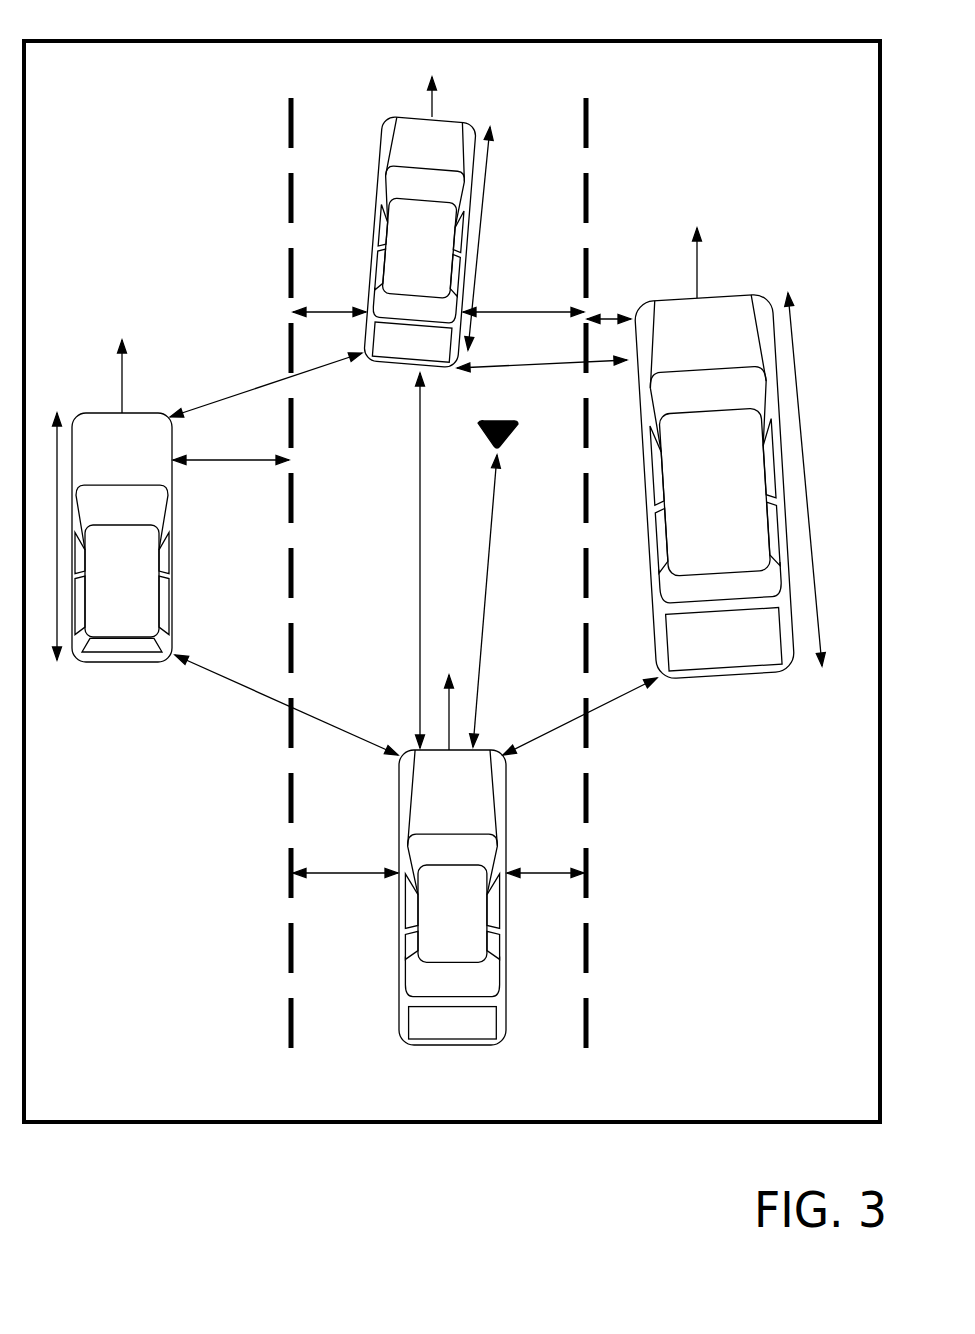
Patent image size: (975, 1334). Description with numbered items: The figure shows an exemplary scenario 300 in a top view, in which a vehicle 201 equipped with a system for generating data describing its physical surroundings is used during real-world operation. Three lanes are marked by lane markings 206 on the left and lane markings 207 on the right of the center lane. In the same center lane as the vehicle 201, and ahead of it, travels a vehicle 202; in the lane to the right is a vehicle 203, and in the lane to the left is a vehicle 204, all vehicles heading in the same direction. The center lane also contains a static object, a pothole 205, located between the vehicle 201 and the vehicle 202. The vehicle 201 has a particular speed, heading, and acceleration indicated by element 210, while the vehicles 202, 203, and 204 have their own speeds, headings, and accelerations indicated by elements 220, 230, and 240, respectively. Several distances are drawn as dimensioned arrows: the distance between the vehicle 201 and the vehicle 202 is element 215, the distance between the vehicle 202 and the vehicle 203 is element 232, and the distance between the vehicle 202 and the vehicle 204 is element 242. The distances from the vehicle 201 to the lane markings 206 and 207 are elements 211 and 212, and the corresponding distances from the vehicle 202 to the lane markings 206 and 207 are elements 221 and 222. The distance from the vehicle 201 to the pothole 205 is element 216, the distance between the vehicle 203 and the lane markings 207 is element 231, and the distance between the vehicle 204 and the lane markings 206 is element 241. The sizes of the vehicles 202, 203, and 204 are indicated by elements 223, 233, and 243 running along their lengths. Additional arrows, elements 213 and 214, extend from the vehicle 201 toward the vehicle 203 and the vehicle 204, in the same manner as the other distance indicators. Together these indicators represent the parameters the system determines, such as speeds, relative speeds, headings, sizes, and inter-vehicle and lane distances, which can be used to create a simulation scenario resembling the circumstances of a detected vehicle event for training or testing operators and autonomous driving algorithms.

The scenario 300 is at (833, 26).
The vehicle 201 is at (472, 831).
The vehicle 202 is at (377, 137).
The vehicle 203 is at (720, 367).
The vehicle 204 is at (140, 476).
The pothole 205 is at (580, 421).
The lane markings 206 is at (305, 1076).
The lane markings 207 is at (783, 1077).
The element indicating speed, heading, and acceleration of vehicle 201 210 is at (470, 676).
The element indicating distance from vehicle 201 to lane markings 206 211 is at (365, 872).
The element indicating distance from vehicle 201 to lane markings 207 212 is at (562, 872).
The distance from vehicle 201 to vehicle 203 213 is at (568, 722).
The distance from vehicle 201 to vehicle 204 214 is at (355, 719).
The element indicating distance between vehicle 201 and vehicle 202 215 is at (418, 617).
The element indicating distance from vehicle 201 to pothole 205 216 is at (530, 609).
The element indicating speed, heading, and acceleration of vehicle 202 220 is at (453, 72).
The element indicating distance from vehicle 202 to lane markings 206 221 is at (352, 309).
The element indicating distance from vehicle 202 to lane markings 207 222 is at (550, 311).
The element indicating size of vehicle 202 223 is at (530, 214).
The element indicating speed, heading, and acceleration of vehicle 203 230 is at (718, 224).
The element indicating distance between vehicle 203 and lane markings 207 231 is at (635, 314).
The element indicating distance between vehicle 202 and vehicle 203 232 is at (558, 361).
The element indicating size of vehicle 203 233 is at (820, 293).
The element indicating speed, heading, and acceleration of vehicle 204 240 is at (143, 337).
The element indicating distance between vehicle 204 and lane markings 206 241 is at (252, 457).
The element indicating distance between vehicle 202 and vehicle 204 242 is at (255, 386).
The element indicating size of vehicle 204 243 is at (72, 411).